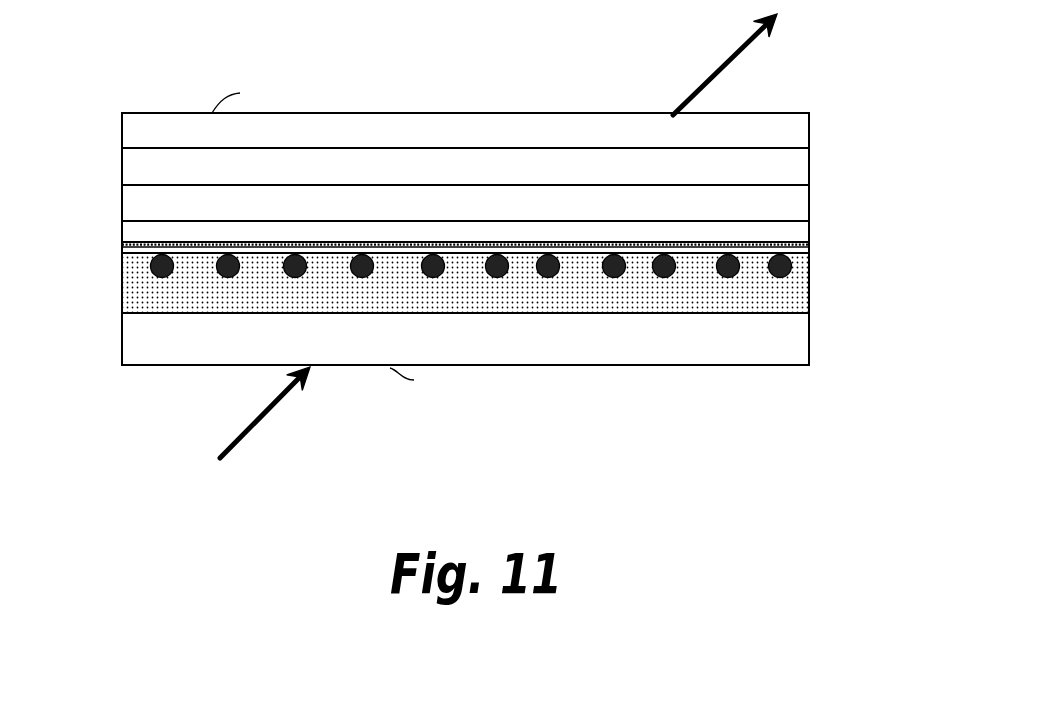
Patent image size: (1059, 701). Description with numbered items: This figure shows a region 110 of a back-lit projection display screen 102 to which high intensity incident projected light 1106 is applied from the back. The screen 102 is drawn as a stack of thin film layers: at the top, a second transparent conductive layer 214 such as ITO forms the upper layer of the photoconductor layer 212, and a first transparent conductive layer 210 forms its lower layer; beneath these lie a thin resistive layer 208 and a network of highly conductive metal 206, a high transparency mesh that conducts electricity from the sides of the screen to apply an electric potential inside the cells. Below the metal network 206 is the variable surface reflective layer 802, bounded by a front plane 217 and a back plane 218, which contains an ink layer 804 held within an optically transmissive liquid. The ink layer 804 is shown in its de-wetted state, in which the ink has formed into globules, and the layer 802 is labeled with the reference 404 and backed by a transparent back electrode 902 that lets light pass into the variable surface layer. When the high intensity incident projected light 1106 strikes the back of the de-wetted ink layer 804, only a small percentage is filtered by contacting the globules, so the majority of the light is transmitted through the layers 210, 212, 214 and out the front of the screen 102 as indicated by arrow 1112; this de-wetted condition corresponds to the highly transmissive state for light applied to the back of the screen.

The projection display screen 102 is at (811, 113).
The region 110 is at (102, 359).
The network of highly conductive metal 206 is at (124, 243).
The thin resistive layer 208 is at (803, 234).
The first transparent conductive layer 210 is at (465, 203).
The photoconductor layer 212 is at (465, 166).
The second transparent conductive layer 214 is at (465, 130).
The front plane 217 is at (806, 254).
The back plane 218 is at (806, 312).
The ink layer 404 is at (806, 284).
The variable surface reflective layer 802 is at (128, 268).
The ink layer 804 is at (305, 270).
The transparent back electrode 902 is at (465, 340).
The high intensity incident projected light 1106 is at (258, 425).
The arrow 1112 is at (723, 68).